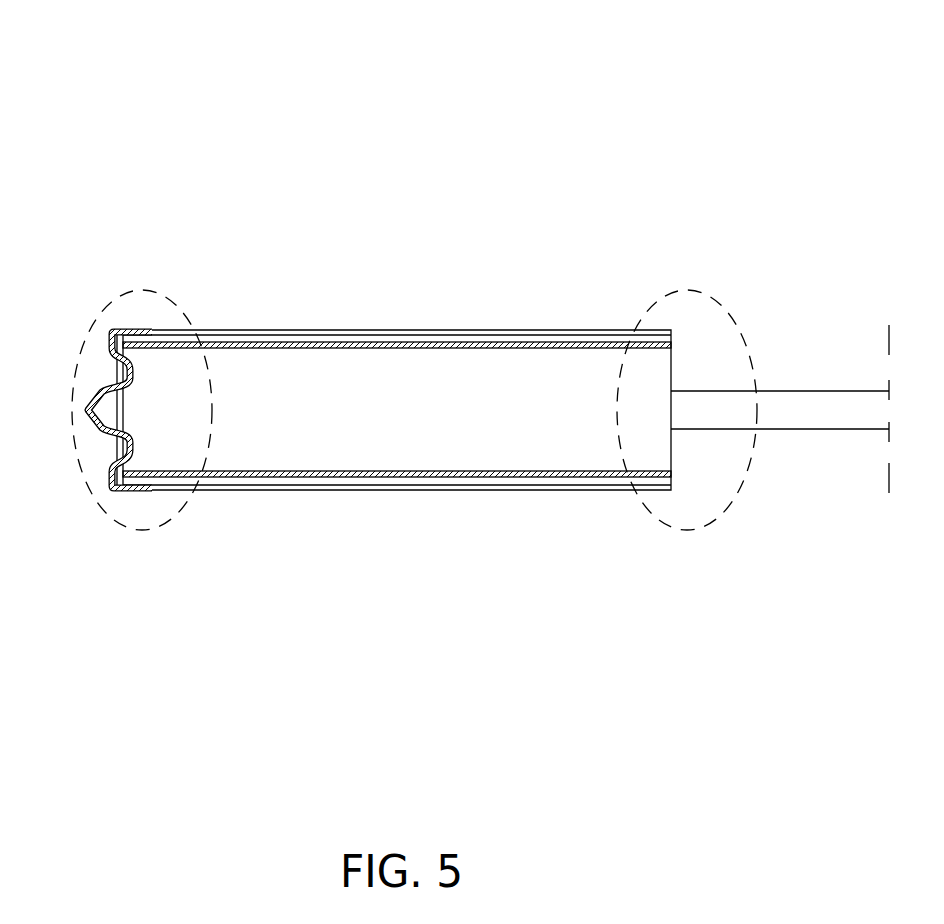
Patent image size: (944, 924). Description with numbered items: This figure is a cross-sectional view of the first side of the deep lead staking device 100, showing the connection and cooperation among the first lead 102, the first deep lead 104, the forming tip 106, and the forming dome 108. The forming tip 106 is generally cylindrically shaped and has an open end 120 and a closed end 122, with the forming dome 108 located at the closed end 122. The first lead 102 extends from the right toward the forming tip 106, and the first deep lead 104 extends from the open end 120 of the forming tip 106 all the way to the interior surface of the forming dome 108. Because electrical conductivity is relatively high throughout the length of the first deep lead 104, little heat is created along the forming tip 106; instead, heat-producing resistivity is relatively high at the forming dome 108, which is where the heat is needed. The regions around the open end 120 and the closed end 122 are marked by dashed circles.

The deep lead staking device 100 is at (660, 138).
The first lead 102 is at (780, 429).
The first deep lead 104 is at (372, 430).
The forming tip 106 is at (305, 328).
The forming dome 108 is at (107, 460).
The open end 120 is at (686, 290).
The closed end 122 is at (135, 290).